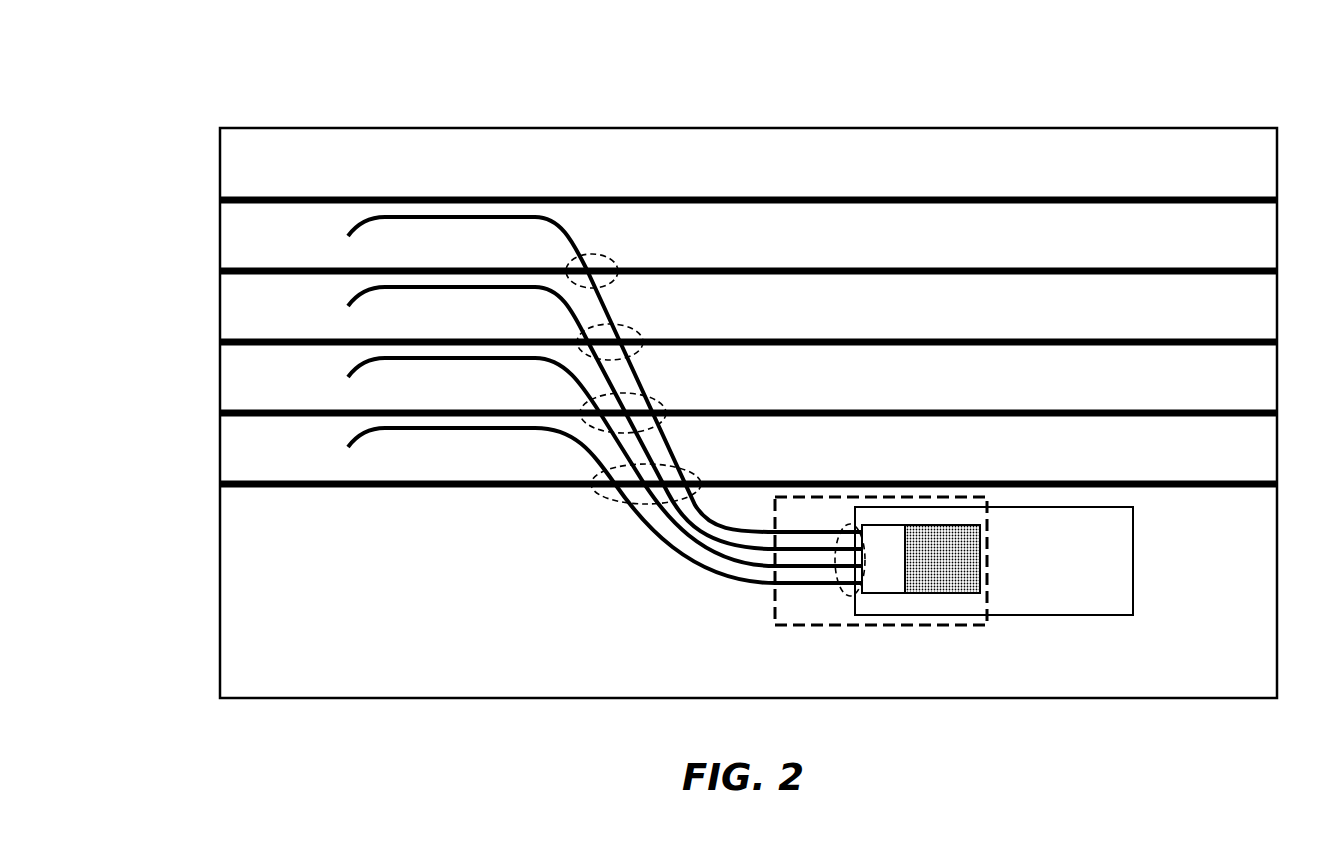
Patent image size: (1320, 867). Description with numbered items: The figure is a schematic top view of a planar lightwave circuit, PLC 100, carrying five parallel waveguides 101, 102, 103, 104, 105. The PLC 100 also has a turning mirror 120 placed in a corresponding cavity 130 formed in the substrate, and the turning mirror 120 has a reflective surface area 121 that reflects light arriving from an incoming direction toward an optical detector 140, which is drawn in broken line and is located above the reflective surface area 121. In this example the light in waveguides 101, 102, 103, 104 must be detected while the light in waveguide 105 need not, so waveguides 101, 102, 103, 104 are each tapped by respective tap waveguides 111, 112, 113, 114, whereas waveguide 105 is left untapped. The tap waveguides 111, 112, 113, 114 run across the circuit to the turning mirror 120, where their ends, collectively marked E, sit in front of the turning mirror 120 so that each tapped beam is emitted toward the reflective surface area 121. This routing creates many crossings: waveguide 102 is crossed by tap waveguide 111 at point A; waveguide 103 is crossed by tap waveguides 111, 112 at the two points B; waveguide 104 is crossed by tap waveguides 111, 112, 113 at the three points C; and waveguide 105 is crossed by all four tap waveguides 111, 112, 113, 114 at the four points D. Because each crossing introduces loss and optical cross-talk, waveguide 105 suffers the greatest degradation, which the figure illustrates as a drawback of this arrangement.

The PLC 100 is at (1118, 88).
The waveguide 101 is at (252, 199).
The waveguide 102 is at (252, 270).
The waveguide 103 is at (252, 341).
The waveguide 104 is at (252, 412).
The waveguide 105 is at (252, 483).
The tap waveguide 111 is at (348, 237).
The tap waveguide 112 is at (348, 307).
The tap waveguide 113 is at (348, 378).
The tap waveguide 114 is at (348, 446).
The crossing point A is at (605, 257).
The crossing points B is at (635, 329).
The crossing points C is at (661, 399).
The crossing points D is at (691, 469).
The tap waveguide ends E is at (845, 527).
The turning mirror 120 is at (983, 560).
The reflective surface area 121 is at (884, 590).
The cavity 130 is at (1133, 552).
The optical detector 140 is at (774, 605).